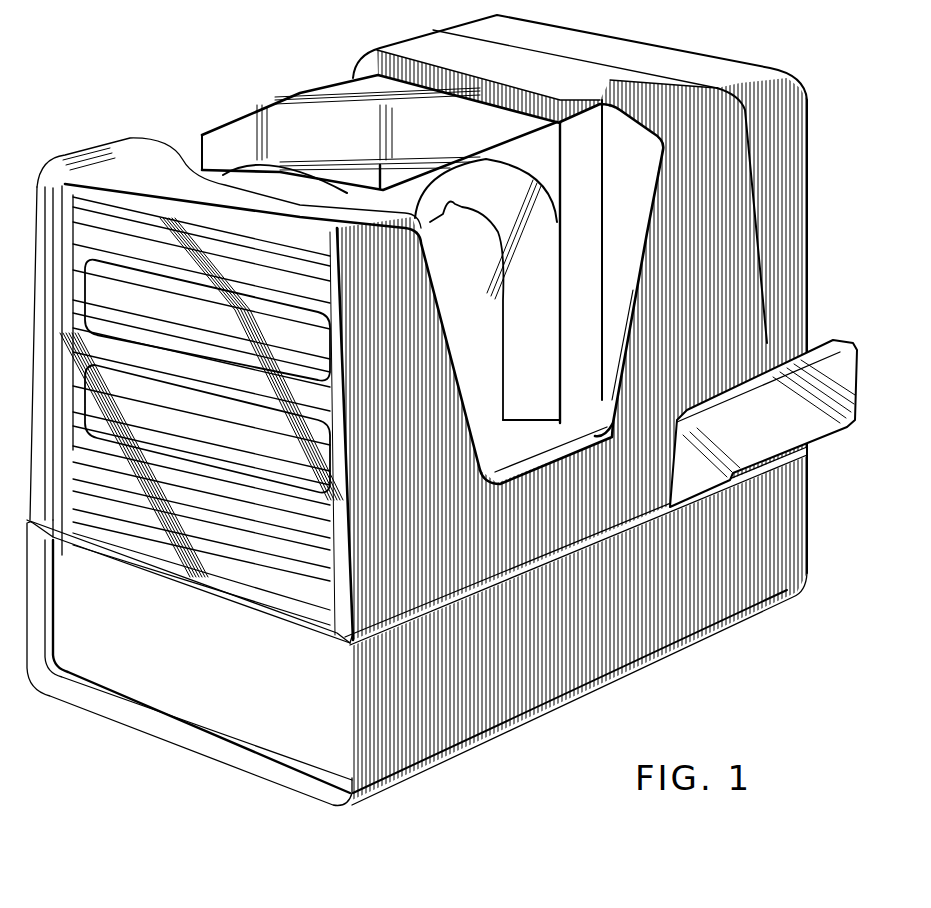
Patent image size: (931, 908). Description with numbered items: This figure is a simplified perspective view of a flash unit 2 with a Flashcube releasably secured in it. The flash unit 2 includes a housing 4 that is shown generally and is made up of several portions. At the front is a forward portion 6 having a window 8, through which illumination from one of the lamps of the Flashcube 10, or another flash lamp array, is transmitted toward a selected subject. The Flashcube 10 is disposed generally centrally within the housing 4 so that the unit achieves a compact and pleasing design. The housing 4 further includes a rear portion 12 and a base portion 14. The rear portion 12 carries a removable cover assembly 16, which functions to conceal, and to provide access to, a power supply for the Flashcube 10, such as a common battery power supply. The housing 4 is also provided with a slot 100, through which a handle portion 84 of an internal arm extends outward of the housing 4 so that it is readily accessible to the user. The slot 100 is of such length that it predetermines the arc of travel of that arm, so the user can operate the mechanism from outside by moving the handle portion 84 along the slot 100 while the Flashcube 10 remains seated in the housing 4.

The flash unit 2 is at (276, 788).
The housing 4 is at (537, 507).
The forward portion 6 is at (337, 510).
The window 8 is at (207, 388).
The Flashcube 10 is at (293, 94).
The rear portion 12 is at (775, 273).
The base portion 14 is at (640, 632).
The removable cover assembly 16 is at (695, 65).
The handle portion 84 is at (818, 433).
The slot 100 is at (507, 590).